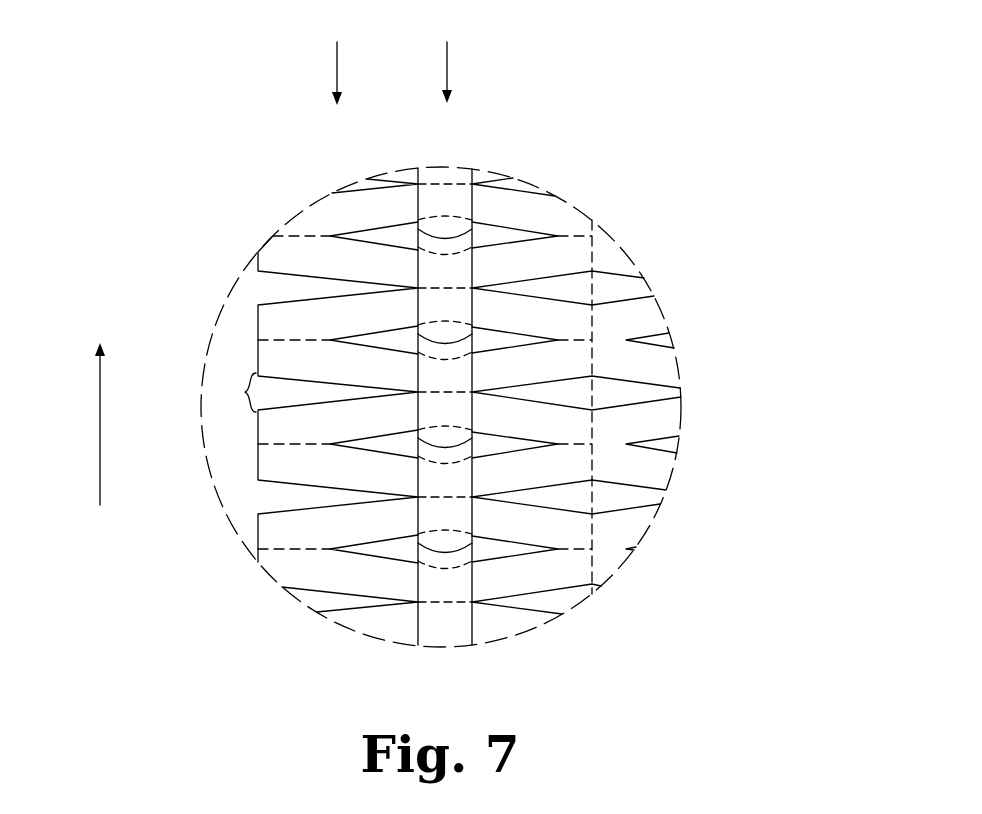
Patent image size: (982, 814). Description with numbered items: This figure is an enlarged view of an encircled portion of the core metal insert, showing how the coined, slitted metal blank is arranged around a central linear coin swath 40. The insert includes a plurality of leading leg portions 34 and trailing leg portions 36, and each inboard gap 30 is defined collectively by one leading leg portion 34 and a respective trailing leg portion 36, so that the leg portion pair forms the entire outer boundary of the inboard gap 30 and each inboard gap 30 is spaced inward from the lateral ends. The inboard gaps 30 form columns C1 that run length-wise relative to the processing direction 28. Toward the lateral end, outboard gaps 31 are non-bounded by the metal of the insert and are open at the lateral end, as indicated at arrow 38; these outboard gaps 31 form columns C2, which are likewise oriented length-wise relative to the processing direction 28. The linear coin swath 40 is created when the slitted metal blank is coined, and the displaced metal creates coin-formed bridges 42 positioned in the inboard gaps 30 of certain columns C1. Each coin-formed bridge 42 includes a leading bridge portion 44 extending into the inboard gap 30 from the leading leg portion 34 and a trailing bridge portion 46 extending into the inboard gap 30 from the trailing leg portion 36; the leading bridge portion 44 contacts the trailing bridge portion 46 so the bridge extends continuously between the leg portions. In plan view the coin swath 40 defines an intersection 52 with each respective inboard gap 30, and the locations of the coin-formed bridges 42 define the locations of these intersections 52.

The processing direction 28 is at (100, 425).
The inboard gap 30 is at (413, 225).
The outboard gap 31 is at (312, 276).
The leading leg portion 34 is at (560, 207).
The trailing leg portion 36 is at (572, 258).
The arrow 38 is at (234, 394).
The linear coin swath 40 is at (456, 156).
The coin-formed bridge 42 is at (436, 199).
The leading bridge portion 44 is at (458, 230).
The trailing bridge portion 46 is at (474, 252).
The intersection 52 is at (484, 331).
The columns of inboard gaps C1 is at (446, 57).
The columns of outboard gaps C2 is at (336, 58).